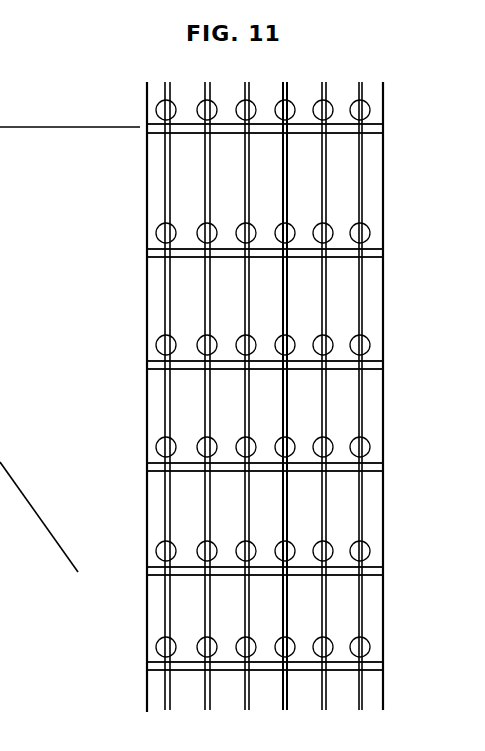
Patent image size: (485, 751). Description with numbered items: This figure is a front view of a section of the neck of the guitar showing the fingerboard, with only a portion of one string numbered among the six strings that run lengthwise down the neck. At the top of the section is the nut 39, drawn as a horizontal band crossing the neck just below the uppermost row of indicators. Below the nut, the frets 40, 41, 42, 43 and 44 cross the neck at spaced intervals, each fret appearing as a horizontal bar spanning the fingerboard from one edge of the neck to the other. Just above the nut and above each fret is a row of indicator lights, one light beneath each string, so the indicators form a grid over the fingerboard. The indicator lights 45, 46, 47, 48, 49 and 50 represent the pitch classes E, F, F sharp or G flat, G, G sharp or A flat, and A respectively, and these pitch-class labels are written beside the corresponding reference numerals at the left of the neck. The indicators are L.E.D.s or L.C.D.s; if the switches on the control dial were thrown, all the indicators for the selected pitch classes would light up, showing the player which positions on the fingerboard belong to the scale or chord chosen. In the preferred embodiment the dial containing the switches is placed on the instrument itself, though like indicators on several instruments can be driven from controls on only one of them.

The nut 39 is at (380, 128).
The fret 40 is at (380, 253).
The fret 41 is at (378, 366).
The fret 42 is at (378, 468).
The fret 43 is at (372, 572).
The fret 44 is at (370, 670).
The indicator light 45 is at (160, 108).
The indicator light 46 is at (158, 230).
The indicator light 47 is at (158, 340).
The indicator light 48 is at (158, 445).
The indicator light 49 is at (160, 550).
The indicator light 50 is at (158, 645).